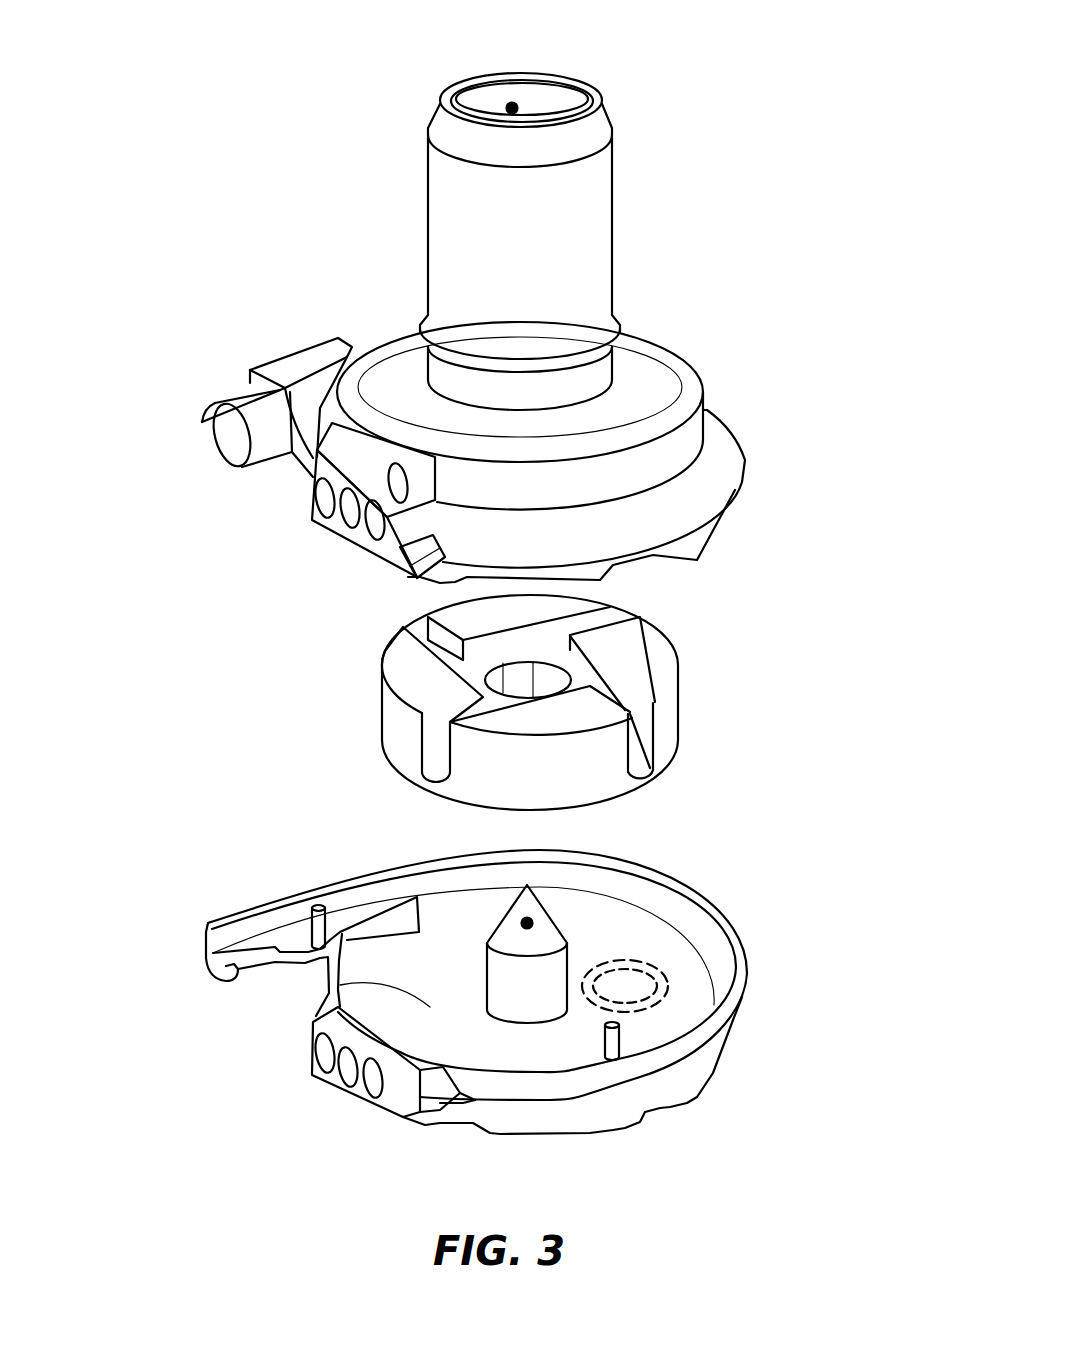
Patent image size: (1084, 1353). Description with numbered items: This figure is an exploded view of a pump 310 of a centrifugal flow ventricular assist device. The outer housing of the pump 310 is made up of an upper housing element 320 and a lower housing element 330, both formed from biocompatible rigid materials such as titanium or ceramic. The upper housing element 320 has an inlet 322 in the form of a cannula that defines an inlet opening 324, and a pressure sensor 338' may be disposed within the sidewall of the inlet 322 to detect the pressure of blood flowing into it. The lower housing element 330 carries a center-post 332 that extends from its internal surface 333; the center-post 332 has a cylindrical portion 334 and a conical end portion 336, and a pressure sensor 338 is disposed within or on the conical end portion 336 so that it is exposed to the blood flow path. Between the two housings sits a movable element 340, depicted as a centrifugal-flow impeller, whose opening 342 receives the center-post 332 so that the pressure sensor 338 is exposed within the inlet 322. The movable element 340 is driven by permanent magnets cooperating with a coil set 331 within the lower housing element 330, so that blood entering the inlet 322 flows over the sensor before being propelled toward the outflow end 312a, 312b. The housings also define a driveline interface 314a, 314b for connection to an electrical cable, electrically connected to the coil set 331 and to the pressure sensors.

The pump 310 is at (420, 293).
The outflow end 312a is at (208, 464).
The driveline interface 314a is at (324, 538).
The upper housing element 320 is at (402, 353).
The inlet 322 is at (566, 181).
The inlet opening 324 is at (548, 114).
The pressure sensor 338' is at (547, 59).
The movable element 340 is at (506, 702).
The opening 342 is at (553, 680).
The lower housing element 330 is at (470, 997).
The coil set 331 is at (628, 980).
The center-post 332 is at (449, 954).
The internal surface 333 is at (340, 990).
The cylindrical portion 334 is at (522, 997).
The conical end portion 336 is at (459, 952).
The pressure sensor 338 is at (598, 874).
The outflow end 312b is at (199, 971).
The driveline interface 314b is at (320, 1092).